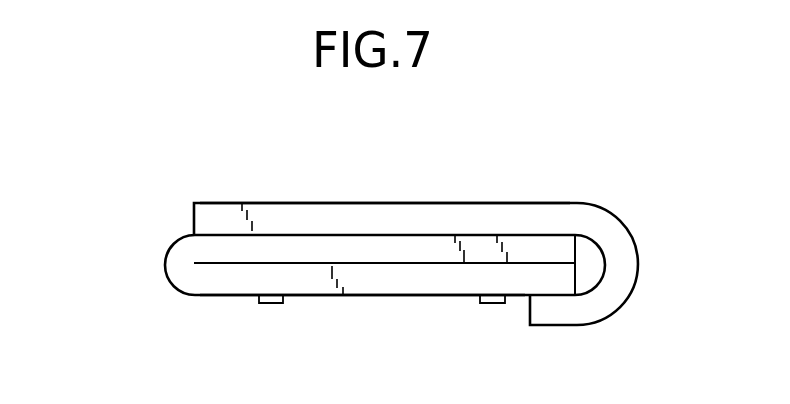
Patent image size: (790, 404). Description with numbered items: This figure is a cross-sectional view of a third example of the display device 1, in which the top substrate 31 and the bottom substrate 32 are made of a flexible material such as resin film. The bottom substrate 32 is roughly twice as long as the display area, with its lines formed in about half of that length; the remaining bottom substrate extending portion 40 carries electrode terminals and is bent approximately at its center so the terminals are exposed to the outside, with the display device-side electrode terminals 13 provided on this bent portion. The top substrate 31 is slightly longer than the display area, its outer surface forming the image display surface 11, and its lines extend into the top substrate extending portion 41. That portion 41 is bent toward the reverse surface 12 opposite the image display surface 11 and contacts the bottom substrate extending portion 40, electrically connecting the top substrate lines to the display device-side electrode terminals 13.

The display device 1 is at (602, 197).
The image display surface 11 is at (381, 192).
The reverse surface 12 is at (382, 310).
The display device-side electrode terminals 13 is at (273, 305).
The top substrate 31 is at (193, 213).
The bottom substrate 32 is at (164, 258).
The bottom substrate extending portion 40 is at (435, 290).
The top substrate extending portion 41 is at (560, 323).